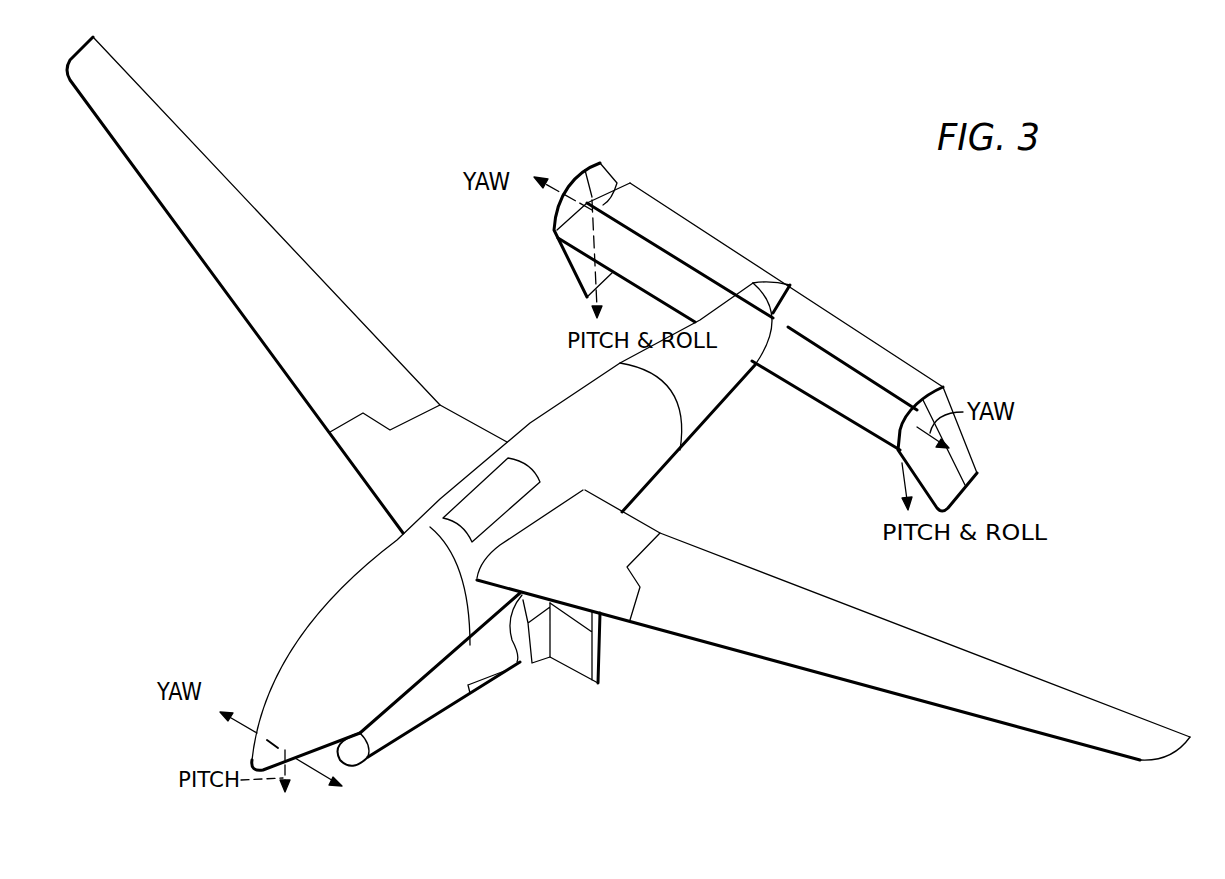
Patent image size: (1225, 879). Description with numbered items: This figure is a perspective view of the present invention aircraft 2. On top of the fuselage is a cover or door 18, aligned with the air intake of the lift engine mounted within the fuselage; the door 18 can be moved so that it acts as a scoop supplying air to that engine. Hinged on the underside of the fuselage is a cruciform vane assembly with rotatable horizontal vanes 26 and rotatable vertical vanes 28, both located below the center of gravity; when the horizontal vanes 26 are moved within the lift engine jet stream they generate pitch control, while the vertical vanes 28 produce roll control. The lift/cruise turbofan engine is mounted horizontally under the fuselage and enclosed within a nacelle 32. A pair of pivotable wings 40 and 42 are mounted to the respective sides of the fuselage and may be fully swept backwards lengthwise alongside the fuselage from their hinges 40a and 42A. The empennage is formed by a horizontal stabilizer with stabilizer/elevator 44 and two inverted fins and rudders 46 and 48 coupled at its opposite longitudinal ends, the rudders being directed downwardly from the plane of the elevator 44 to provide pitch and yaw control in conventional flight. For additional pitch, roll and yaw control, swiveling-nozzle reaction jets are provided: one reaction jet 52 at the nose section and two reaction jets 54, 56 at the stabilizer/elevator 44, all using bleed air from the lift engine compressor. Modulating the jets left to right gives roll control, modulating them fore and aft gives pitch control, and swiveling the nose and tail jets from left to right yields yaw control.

The aircraft 2 is at (268, 547).
The cover or door 18 is at (505, 470).
The horizontal vanes 26 is at (578, 673).
The vertical vanes 28 is at (547, 660).
The nacelle 32 is at (393, 748).
The pivotable wing 40 is at (897, 623).
The hinge 40a is at (637, 567).
The pivotable wing 42 is at (290, 242).
The hinge 42A is at (380, 420).
The stabilizer/elevator 44 is at (908, 362).
The inverted fin and rudder 46 is at (927, 449).
The inverted fin and rudder 48 is at (588, 224).
The swiveling-nozzle reaction jet 52 is at (283, 742).
The swiveling-nozzle reaction jet 54 is at (900, 417).
The swiveling-nozzle reaction jet 56 is at (607, 202).